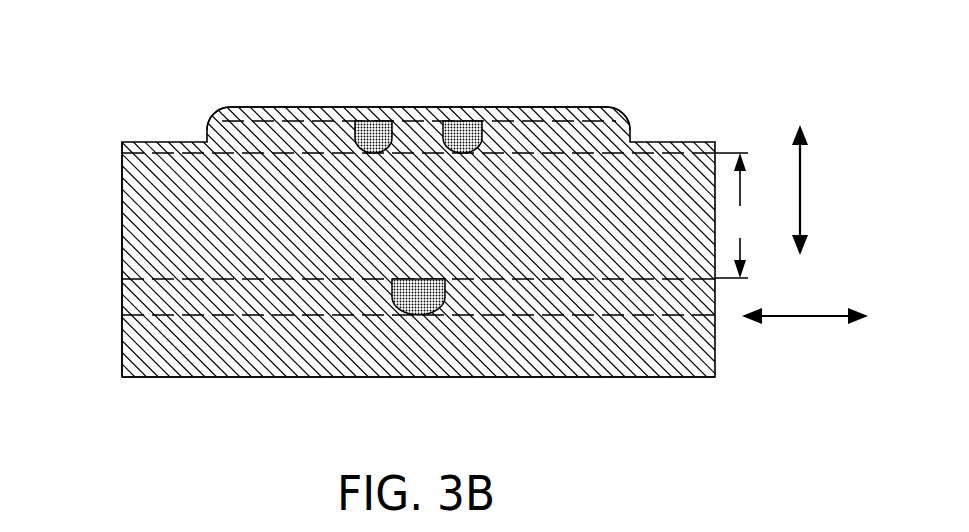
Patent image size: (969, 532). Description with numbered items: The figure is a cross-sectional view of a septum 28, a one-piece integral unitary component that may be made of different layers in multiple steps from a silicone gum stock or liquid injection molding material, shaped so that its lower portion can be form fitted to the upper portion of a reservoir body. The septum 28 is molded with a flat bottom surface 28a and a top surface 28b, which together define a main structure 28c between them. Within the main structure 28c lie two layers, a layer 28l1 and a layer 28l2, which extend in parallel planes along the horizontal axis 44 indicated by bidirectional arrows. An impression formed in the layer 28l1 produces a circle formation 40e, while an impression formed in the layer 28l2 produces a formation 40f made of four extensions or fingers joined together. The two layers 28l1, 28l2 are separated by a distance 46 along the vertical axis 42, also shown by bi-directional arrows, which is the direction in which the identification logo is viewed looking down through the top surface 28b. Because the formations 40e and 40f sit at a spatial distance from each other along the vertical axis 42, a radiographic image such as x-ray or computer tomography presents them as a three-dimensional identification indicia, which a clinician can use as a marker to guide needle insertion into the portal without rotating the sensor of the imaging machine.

The septum 28 is at (106, 97).
The flat bottom surface 28a is at (287, 378).
The top surface 28b is at (615, 107).
The main structure 28c is at (123, 274).
The layer 28l1 is at (582, 298).
The layer 28l2 is at (565, 132).
The circle formation 40e is at (418, 315).
The formation 40f is at (352, 128).
The vertical axis 42 is at (801, 178).
The horizontal axis 44 is at (806, 318).
The distance 46 is at (732, 215).